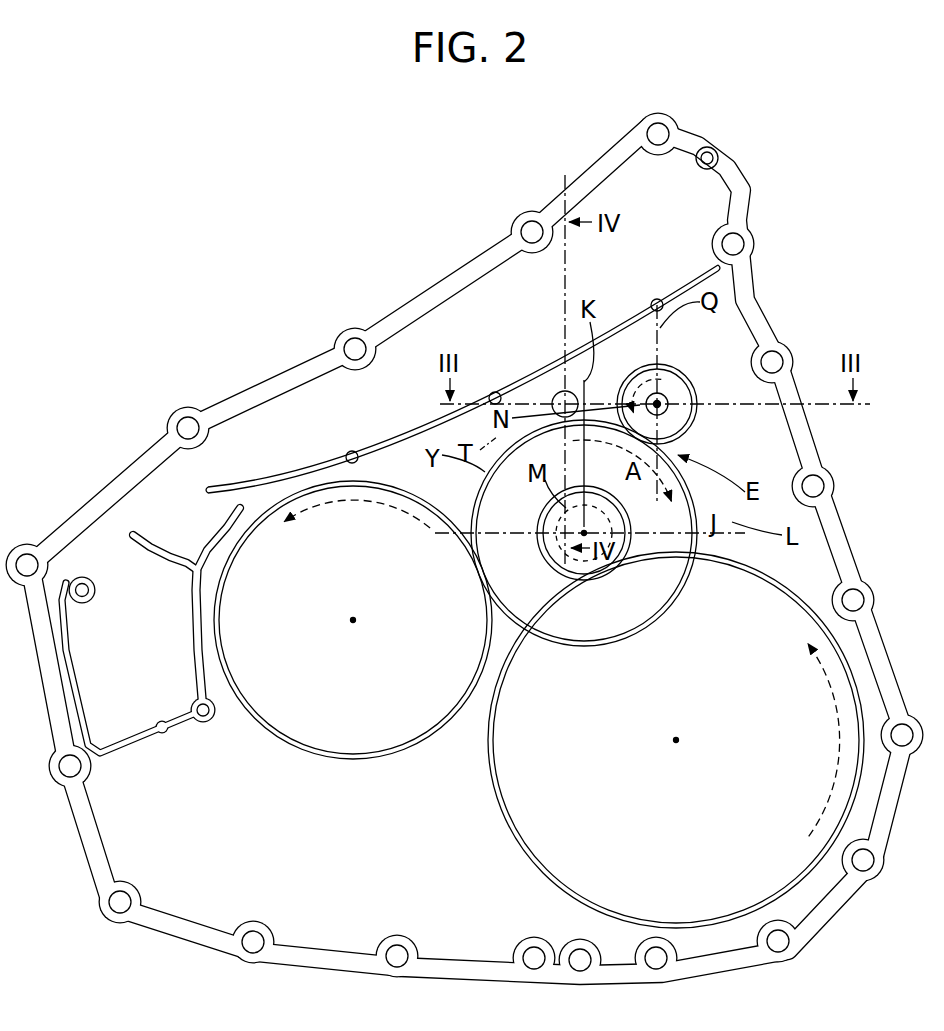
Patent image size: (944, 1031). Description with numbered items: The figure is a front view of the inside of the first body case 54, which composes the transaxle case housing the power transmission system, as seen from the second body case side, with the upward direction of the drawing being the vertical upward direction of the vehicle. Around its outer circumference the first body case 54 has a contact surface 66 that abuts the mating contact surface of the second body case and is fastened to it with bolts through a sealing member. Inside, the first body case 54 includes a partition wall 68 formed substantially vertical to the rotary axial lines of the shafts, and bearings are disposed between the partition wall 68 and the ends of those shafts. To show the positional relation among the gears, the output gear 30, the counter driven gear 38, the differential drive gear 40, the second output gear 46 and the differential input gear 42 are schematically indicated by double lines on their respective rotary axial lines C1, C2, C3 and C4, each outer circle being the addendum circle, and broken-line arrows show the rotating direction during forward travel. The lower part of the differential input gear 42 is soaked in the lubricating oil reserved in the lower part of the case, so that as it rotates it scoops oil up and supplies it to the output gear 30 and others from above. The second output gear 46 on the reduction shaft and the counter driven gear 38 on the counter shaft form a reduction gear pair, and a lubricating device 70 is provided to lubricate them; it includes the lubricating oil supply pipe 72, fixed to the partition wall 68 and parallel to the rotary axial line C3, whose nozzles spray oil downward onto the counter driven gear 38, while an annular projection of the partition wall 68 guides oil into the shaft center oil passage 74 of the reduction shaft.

The first body case 54 is at (465, 547).
The contact surface 66 is at (100, 505).
The partition wall 68 is at (300, 405).
The lubricating oil supply pipe 72 is at (540, 398).
The lubricating device 70 is at (617, 357).
The shaft center oil passage 74 is at (677, 393).
The second output gear 46 is at (670, 392).
The counter driven gear 38 is at (495, 505).
The differential drive gear 40 is at (592, 574).
The output gear 30 is at (331, 737).
The differential input gear 42 is at (788, 867).
The rotary axial line C1 is at (355, 622).
The rotary axial line of the counter shaft C2 is at (700, 538).
The rotary axial line of the reduction shaft C3 is at (682, 420).
The rotary axial line C4 is at (678, 742).